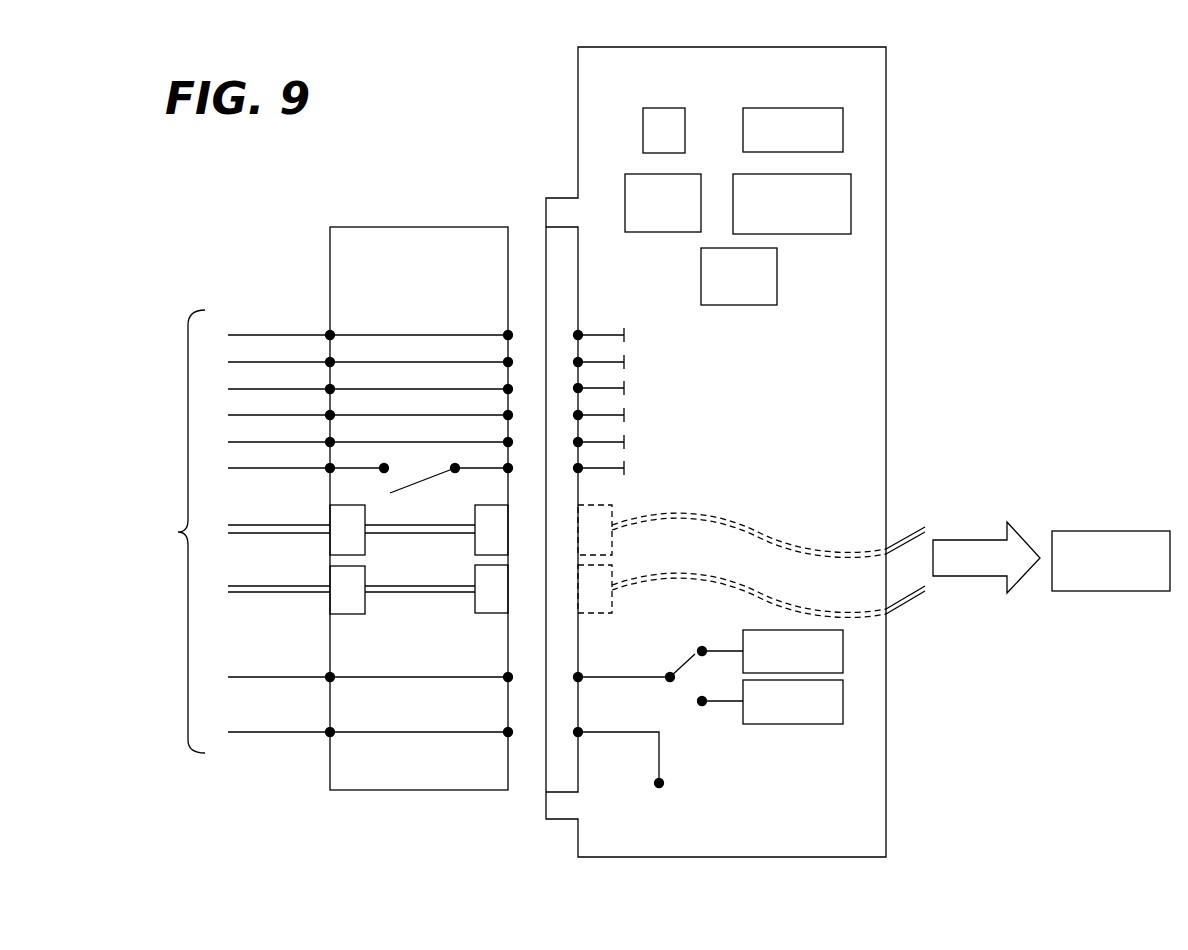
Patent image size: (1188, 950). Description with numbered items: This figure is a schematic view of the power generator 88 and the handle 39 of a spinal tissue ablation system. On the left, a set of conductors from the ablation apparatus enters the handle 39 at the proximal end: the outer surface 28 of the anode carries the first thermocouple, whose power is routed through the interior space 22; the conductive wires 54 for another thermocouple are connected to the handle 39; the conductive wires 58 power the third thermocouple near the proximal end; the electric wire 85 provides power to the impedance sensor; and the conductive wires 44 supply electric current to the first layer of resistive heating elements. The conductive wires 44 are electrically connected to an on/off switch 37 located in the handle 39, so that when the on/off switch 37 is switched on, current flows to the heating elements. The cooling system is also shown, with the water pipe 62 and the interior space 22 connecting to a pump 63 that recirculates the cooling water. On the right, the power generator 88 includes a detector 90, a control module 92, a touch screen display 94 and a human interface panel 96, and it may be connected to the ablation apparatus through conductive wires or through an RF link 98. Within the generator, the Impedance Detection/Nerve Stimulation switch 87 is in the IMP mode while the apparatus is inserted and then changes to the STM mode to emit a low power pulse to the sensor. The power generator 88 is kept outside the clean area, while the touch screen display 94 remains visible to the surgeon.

The interior space 22 is at (238, 594).
The outer surface of the anode 28 is at (240, 362).
The on/off switch 37 is at (423, 477).
The handle 39 is at (438, 227).
The conductive wires 44 is at (240, 470).
The conductive wires 54 is at (240, 389).
The conductive wires 58 is at (240, 415).
The water pipe 62 is at (238, 535).
The pump 63 is at (1135, 531).
The electric wire 85 is at (240, 442).
The Impedance Detection/Nerve Stimulation switch 87 is at (683, 670).
The power generator 88 is at (612, 82).
The detector 90 is at (843, 130).
The control module 92 is at (625, 185).
The touch screen display 94 is at (851, 198).
The human interface panel 96 is at (777, 275).
The RF link 98 is at (643, 130).